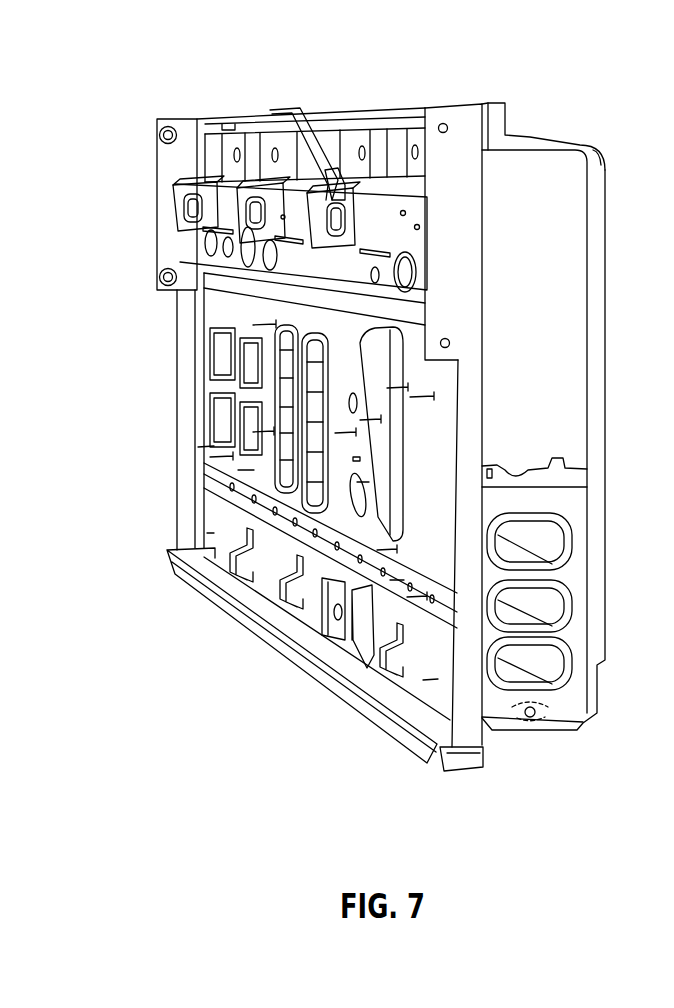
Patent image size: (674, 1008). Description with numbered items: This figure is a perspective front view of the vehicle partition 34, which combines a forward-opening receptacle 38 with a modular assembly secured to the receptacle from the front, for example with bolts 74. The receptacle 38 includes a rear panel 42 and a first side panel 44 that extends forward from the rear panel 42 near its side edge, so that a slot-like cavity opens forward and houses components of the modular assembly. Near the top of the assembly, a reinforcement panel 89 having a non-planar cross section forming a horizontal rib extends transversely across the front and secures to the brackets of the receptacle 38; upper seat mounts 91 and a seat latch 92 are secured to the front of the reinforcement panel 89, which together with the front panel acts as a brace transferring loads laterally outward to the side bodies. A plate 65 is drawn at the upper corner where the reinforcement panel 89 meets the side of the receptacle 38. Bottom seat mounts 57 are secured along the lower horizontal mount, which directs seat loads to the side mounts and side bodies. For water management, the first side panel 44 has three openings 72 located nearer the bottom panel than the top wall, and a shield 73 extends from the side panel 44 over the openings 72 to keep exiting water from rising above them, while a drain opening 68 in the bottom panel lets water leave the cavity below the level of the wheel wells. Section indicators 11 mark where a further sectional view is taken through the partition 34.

The section line for FIG. 11 is at (283, 103).
The vehicle partition 34 is at (380, 76).
The forward-opening receptacle 38 is at (578, 441).
The rear panel 42 is at (608, 277).
The first side panel 44 is at (563, 341).
The bottom seat mounts 57 is at (227, 563).
The end plate 65 is at (447, 103).
The drain opening 68 is at (567, 722).
The openings 72 is at (557, 543).
The shield 73 is at (578, 478).
The bolts 74 is at (118, 150).
The reinforcement panel 89 is at (198, 225).
The upper seat mounts 91 is at (192, 217).
The seat latch 92 is at (292, 102).